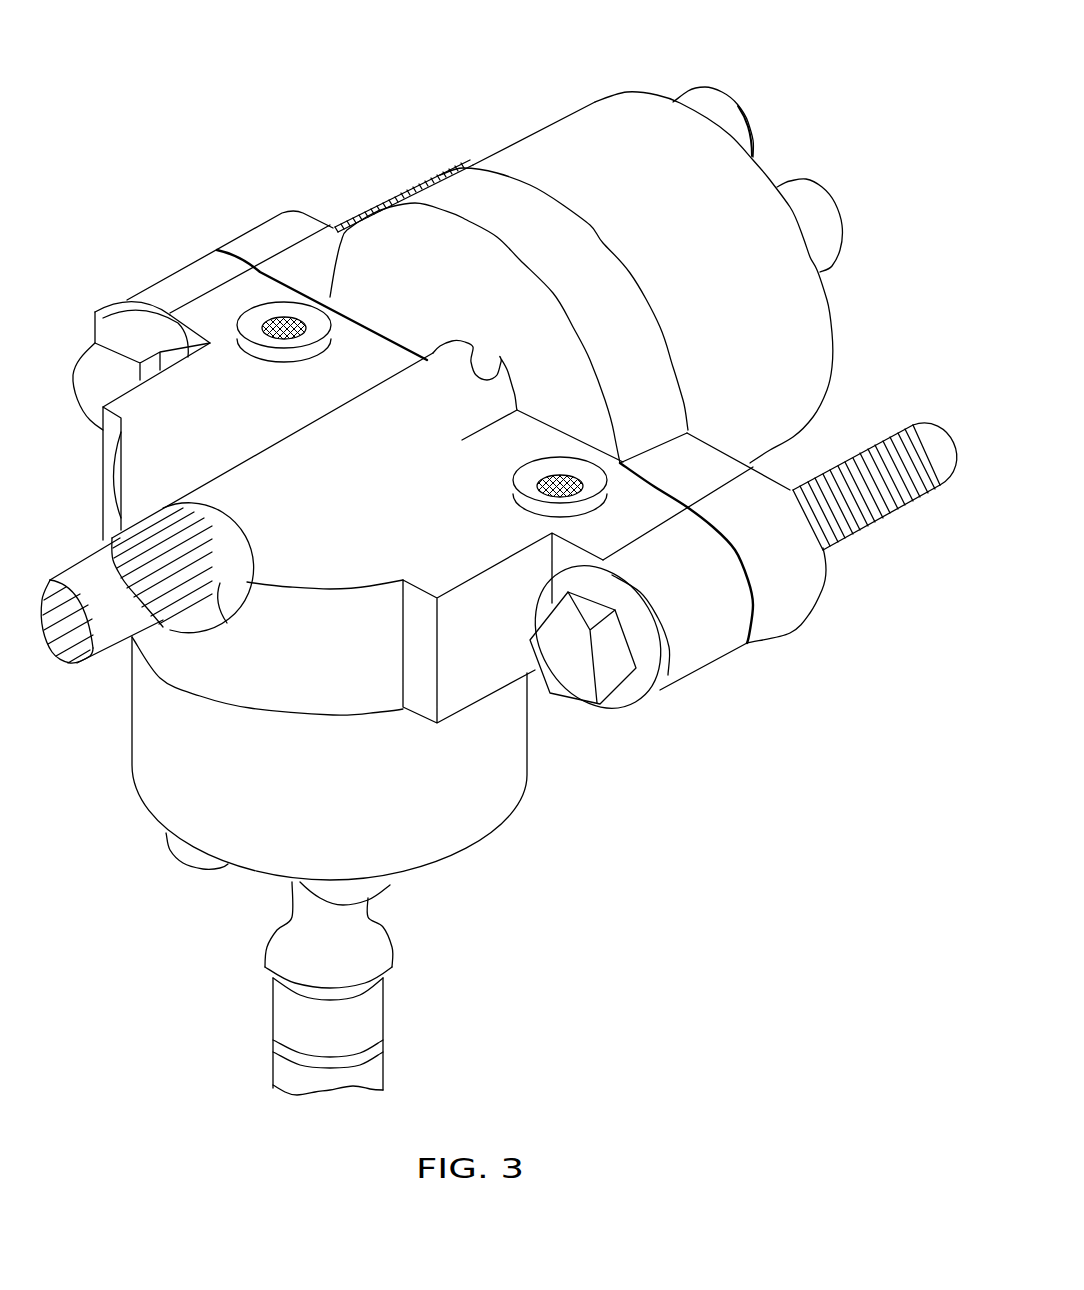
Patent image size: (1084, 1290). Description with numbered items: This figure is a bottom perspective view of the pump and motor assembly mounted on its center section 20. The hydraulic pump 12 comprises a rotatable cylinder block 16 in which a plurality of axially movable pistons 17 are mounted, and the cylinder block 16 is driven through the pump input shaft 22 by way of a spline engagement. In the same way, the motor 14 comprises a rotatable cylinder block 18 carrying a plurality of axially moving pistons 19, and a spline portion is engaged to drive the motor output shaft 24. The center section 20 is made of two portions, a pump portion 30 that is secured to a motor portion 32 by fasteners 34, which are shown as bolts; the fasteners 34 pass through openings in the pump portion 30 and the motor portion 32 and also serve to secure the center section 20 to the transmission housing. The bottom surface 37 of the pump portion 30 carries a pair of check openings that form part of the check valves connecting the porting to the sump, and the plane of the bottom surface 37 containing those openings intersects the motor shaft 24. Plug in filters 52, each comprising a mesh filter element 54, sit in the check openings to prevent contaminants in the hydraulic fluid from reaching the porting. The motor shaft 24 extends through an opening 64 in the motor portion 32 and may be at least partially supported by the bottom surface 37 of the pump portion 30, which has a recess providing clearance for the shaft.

The hydraulic pump 12 is at (350, 866).
The motor 14 is at (657, 234).
The rotatable cylinder block 16 is at (310, 793).
The axially movable pistons 17 is at (383, 898).
The rotatable cylinder block 18 is at (692, 277).
The axially moving pistons 19 is at (738, 112).
The center section 20 is at (377, 433).
The pump input shaft 22 is at (313, 1042).
The motor output shaft 24 is at (318, 475).
The pump portion 30 is at (683, 615).
The motor portion 32 is at (766, 570).
The fasteners 34 is at (876, 520).
The bottom surface 37 is at (418, 540).
The plug in filters 52 is at (310, 340).
The mesh filter element 54 is at (277, 320).
The opening 64 is at (473, 358).